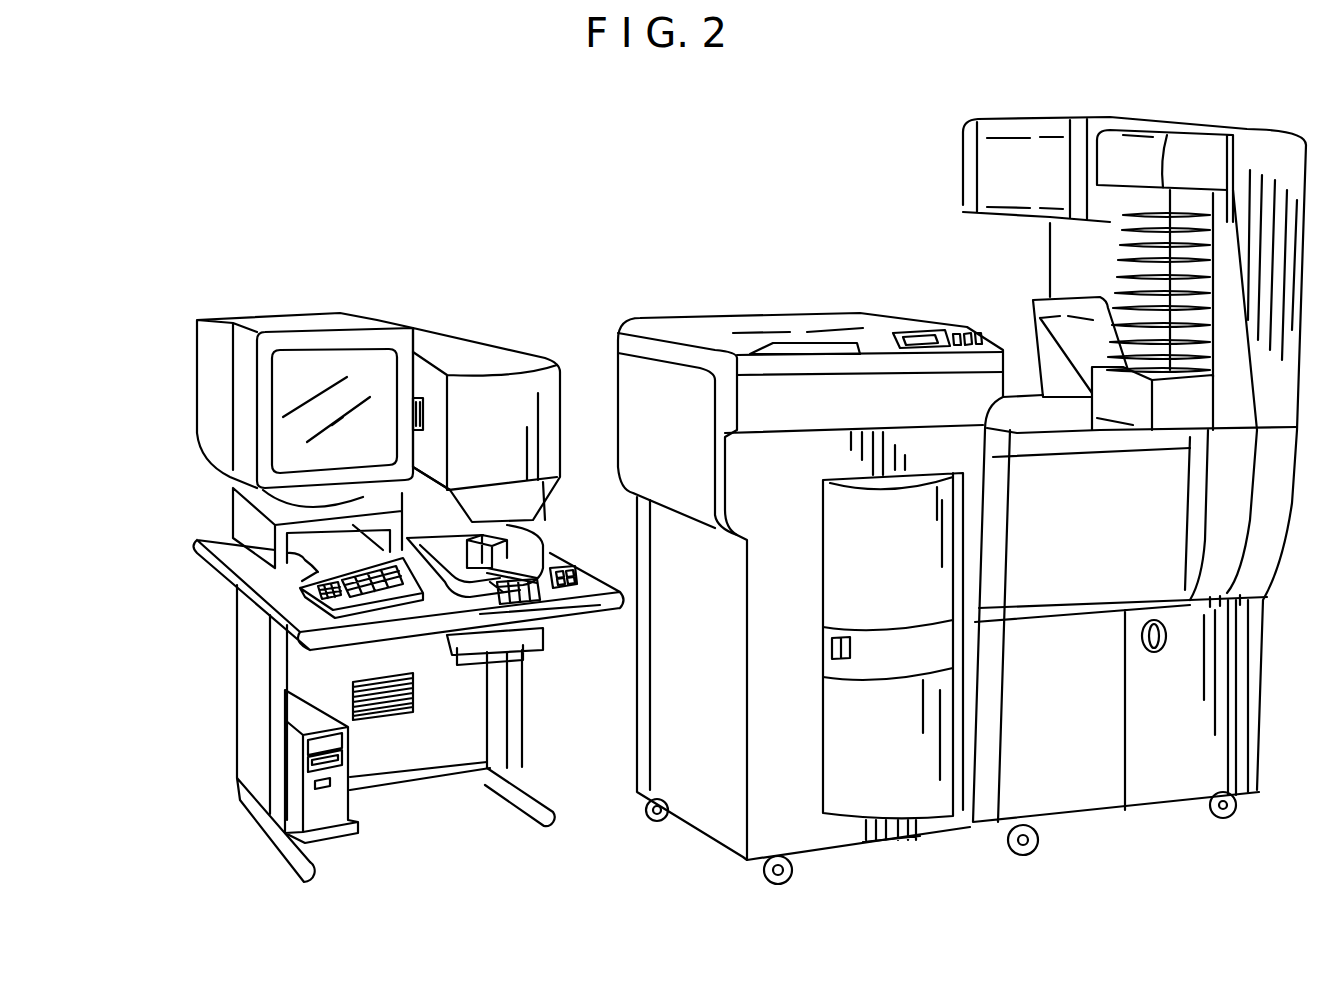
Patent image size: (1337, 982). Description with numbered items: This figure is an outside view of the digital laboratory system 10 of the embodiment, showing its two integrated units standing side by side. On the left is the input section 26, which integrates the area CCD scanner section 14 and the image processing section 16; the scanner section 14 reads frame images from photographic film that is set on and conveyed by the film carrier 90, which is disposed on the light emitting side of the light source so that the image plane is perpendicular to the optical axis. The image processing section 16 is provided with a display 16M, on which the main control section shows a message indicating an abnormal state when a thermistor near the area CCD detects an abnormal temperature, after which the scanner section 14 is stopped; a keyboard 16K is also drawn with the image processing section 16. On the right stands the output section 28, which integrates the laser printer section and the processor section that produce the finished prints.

The digital laboratory system 10 is at (512, 172).
The area CCD scanner section 14 is at (535, 338).
The image processing section 16 is at (363, 802).
The keyboard 16K is at (300, 585).
The display 16M is at (245, 362).
The input section 26 is at (278, 277).
The output section 28 is at (768, 238).
The film carrier 90 is at (528, 543).